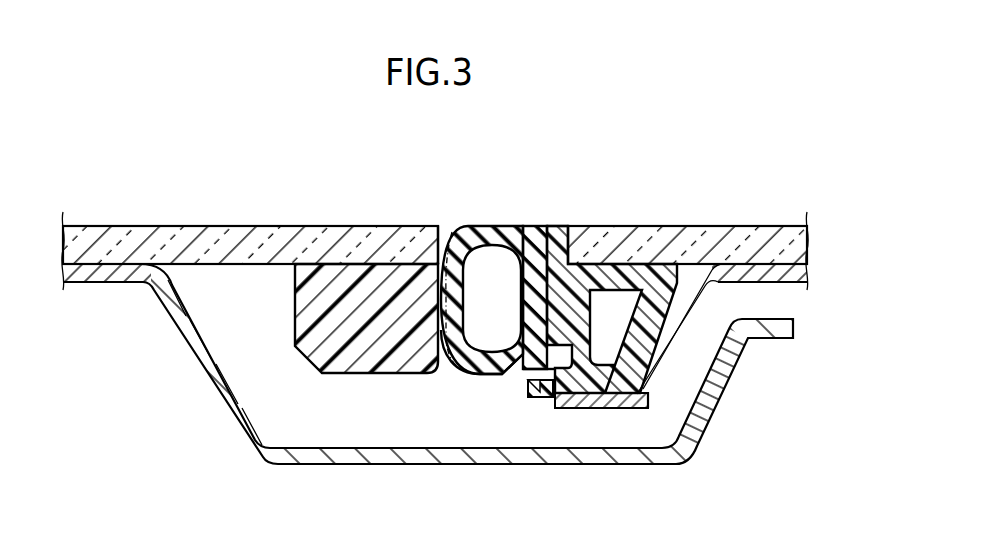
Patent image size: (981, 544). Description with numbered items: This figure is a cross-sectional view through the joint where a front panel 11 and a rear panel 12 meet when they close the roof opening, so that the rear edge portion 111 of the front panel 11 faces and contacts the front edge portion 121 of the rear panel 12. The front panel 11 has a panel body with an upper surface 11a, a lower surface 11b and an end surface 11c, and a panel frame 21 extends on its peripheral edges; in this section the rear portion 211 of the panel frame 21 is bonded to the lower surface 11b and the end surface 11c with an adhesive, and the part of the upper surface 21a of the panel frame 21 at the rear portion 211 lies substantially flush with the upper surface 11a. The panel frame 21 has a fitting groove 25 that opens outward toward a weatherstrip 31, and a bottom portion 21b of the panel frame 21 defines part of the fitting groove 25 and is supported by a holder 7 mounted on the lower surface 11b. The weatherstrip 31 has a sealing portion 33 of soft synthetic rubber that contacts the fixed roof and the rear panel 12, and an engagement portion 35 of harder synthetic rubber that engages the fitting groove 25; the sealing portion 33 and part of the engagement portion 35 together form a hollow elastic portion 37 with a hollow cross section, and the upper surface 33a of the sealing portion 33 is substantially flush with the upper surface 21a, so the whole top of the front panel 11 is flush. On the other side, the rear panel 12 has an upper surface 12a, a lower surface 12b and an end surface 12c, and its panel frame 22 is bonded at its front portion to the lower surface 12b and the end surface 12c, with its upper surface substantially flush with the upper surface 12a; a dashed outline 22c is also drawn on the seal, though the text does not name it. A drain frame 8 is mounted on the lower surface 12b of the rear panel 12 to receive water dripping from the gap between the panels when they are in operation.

The drain frame 8 is at (305, 460).
The fitting groove 25 is at (663, 389).
The rear panel 12 is at (200, 226).
The upper surface of the rear panel 12a is at (107, 220).
The lower surface of the rear panel 12b is at (248, 271).
The front edge portion of the rear panel 121 is at (390, 216).
The end surface of the rear panel 12c is at (420, 226).
The panel frame 22 is at (312, 355).
The original contour of seal 22c is at (446, 240).
The sealing portion 33 is at (466, 370).
The upper surface of the sealing portion 33a is at (480, 218).
The hollow elastic portion 37 is at (452, 367).
The engagement portion 35 is at (510, 362).
The weatherstrip 31 is at (510, 226).
The panel frame 21 is at (640, 372).
The upper surface of the panel frame 21a is at (557, 216).
The bottom portion 21b is at (588, 408).
The holder 7 is at (644, 396).
The rear portion of the panel frame 211 is at (708, 298).
The front panel 11 is at (688, 226).
The upper surface of the front panel 11a is at (748, 216).
The lower surface of the front panel 11b is at (617, 268).
The end surface of the front panel 11c is at (562, 245).
The rear edge portion of the front panel 111 is at (588, 218).